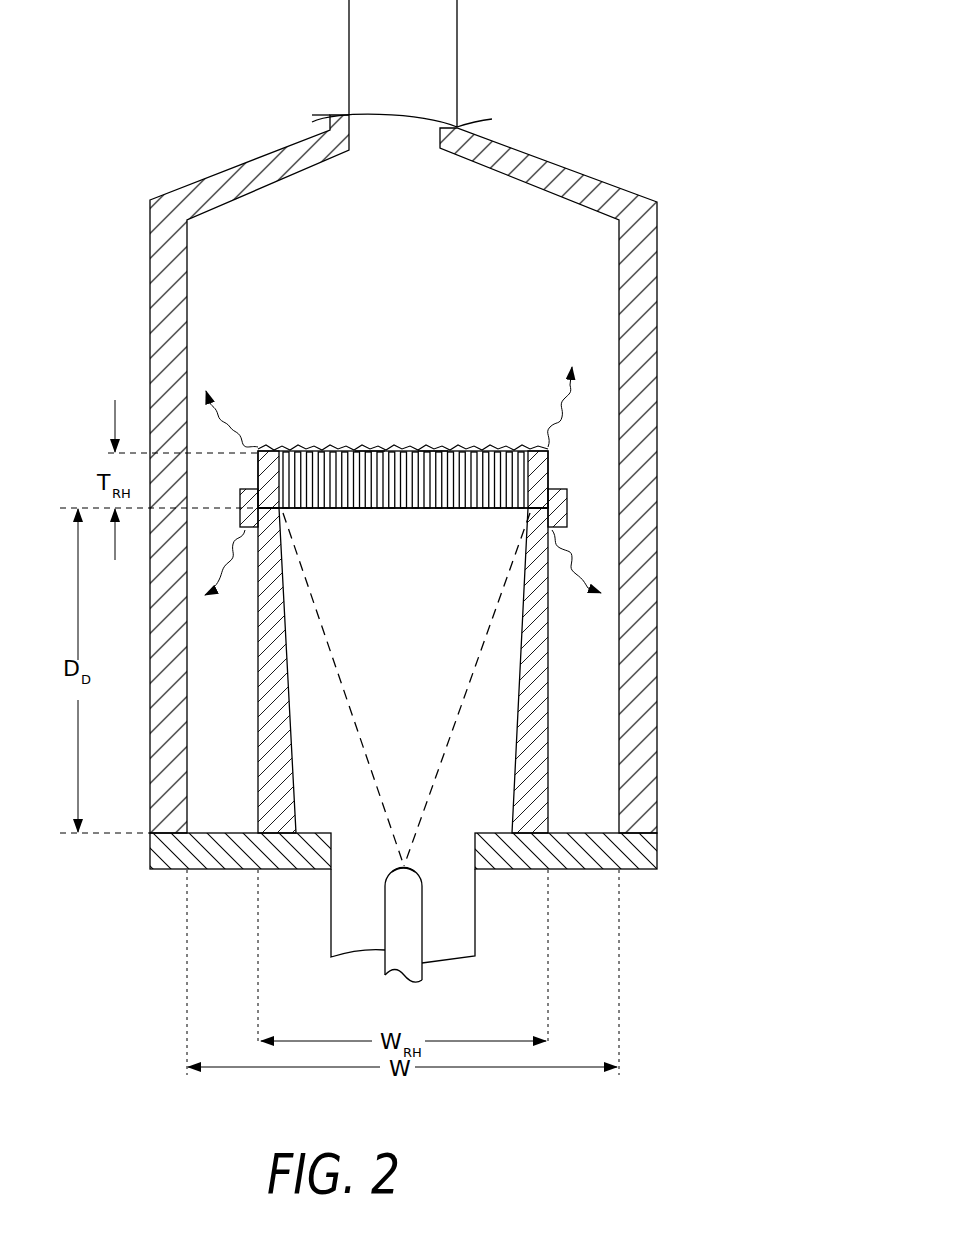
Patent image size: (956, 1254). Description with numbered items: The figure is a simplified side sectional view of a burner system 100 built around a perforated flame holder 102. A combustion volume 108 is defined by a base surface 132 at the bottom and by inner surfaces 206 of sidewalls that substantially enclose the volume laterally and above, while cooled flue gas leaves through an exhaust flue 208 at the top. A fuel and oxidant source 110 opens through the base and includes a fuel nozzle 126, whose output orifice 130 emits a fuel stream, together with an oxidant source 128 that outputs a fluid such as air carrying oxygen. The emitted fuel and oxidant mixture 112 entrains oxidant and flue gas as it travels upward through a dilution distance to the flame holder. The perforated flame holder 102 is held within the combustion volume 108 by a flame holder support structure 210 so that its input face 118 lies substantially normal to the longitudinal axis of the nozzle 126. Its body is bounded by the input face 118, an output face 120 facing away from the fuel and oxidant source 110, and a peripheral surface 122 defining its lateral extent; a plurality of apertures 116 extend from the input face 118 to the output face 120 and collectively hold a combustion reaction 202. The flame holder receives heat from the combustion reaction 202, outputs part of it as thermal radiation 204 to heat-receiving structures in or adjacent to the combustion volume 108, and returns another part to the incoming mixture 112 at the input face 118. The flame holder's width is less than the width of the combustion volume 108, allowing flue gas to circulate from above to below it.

The burner system 100 is at (379, 434).
The perforated flame holder 102 is at (401, 477).
The combustion volume 108 is at (531, 238).
The fuel and oxidant source 110 is at (299, 900).
The fuel and oxidant mixture 112 is at (374, 807).
The apertures 116 is at (432, 451).
The input face 118 is at (358, 514).
The output face 120 is at (369, 451).
The peripheral surface 122 is at (551, 480).
The fuel nozzle 126 is at (423, 945).
The oxidant source 128 is at (477, 887).
The output orifice 130 is at (410, 866).
The base surface 132 is at (585, 831).
The combustion reaction 202 is at (310, 447).
The thermal radiation 204 is at (556, 378).
The inner surfaces of sidewalls 206 is at (194, 330).
The exhaust flue 208 is at (346, 73).
The flame holder support structure 210 is at (258, 690).